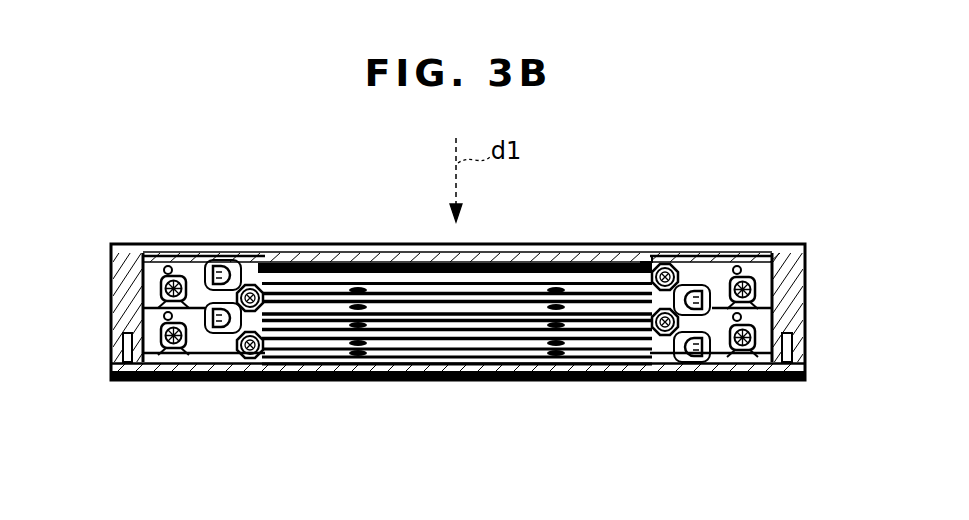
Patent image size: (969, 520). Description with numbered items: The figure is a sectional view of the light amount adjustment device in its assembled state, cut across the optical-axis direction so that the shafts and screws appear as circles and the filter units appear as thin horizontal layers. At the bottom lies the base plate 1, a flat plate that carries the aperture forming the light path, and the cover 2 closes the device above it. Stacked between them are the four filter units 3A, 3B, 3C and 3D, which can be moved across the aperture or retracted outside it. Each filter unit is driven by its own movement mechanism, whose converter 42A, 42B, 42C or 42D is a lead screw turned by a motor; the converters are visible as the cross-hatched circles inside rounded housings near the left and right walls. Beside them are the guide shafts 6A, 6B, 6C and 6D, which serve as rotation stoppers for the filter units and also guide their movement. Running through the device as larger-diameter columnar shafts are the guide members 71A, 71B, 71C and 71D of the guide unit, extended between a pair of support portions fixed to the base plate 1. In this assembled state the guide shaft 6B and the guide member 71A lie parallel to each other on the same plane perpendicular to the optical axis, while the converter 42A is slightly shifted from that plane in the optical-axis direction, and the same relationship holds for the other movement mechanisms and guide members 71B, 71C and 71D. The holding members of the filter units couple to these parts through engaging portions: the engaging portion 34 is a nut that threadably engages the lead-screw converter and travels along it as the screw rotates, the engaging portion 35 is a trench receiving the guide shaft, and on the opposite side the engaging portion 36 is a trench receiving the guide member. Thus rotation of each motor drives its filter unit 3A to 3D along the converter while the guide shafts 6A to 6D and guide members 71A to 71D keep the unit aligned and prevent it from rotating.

The base plate 1 is at (163, 380).
The cover 2 is at (128, 244).
The filter unit 3A is at (320, 360).
The filter unit 3B is at (380, 330).
The filter unit 3C is at (553, 298).
The filter unit 3D is at (320, 270).
The guide shaft 6A is at (222, 340).
The guide shaft 6B is at (700, 355).
The guide shaft 6C is at (215, 262).
The guide shaft 6D is at (697, 283).
The engaging portion 34 is at (761, 283).
The engaging portion 35 is at (655, 258).
The engaging portion 36 is at (224, 258).
The converter 42A is at (175, 352).
The converter 42B is at (742, 352).
The converter 42C is at (175, 262).
The converter 42D is at (745, 262).
The guide member 71A is at (250, 358).
The guide member 71B is at (660, 345).
The guide member 71C is at (255, 262).
The guide member 71D is at (668, 262).